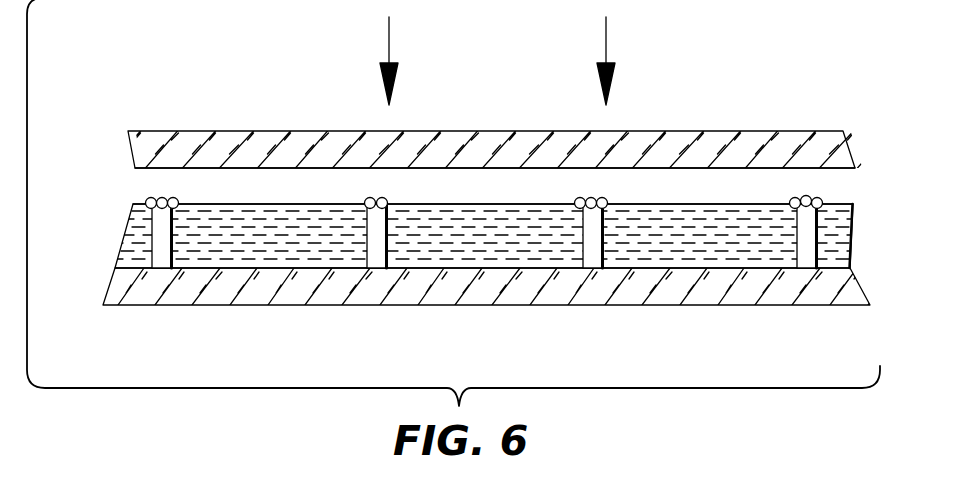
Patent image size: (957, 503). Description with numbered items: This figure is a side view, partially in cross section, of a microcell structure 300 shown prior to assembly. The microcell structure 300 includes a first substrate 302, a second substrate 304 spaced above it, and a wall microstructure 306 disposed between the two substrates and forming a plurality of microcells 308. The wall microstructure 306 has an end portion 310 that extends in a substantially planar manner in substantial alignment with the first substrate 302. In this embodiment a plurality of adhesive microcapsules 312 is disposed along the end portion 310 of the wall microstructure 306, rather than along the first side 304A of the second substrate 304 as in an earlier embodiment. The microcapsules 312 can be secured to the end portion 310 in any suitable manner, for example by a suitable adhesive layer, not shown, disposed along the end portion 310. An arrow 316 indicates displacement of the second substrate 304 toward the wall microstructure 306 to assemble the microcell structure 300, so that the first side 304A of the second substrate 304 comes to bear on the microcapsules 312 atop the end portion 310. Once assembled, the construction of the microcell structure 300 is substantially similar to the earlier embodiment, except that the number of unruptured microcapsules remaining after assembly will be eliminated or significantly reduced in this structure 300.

The microcell structure 300 is at (200, 92).
The first substrate 302 is at (155, 292).
The second substrate 304 is at (160, 138).
The first side of second substrate 304A is at (270, 172).
The wall microstructure 306 is at (378, 230).
The microcells 308 is at (651, 260).
The end portion 310 is at (160, 210).
The adhesive microcapsules 312 is at (595, 198).
The arrow 316 is at (392, 48).